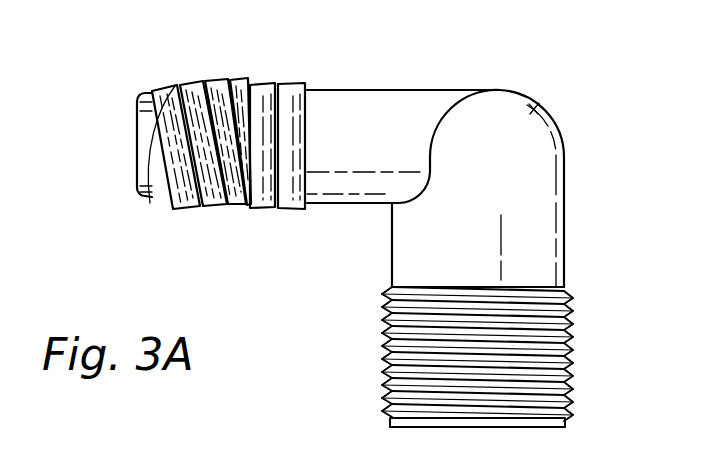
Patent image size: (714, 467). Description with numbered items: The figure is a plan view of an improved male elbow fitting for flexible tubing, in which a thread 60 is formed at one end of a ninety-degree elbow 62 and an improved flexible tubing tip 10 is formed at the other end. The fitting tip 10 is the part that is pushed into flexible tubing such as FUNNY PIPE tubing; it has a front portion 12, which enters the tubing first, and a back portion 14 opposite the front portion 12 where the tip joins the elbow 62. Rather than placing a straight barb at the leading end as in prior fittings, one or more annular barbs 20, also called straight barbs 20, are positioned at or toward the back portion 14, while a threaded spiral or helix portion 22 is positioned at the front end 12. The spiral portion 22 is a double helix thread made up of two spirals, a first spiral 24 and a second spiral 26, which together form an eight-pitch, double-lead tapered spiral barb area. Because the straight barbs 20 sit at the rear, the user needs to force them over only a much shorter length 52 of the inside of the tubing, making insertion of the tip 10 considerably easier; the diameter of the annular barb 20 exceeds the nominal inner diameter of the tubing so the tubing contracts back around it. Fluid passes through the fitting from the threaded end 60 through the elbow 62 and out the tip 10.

The fitting tip 10 is at (355, 234).
The front portion 12 is at (123, 207).
The back portion 14 is at (308, 230).
The annular barbs 20 is at (268, 80).
The spiral portion 22 is at (206, 167).
The first spiral 24 is at (204, 138).
The second spiral 26 is at (213, 80).
The length 52 is at (319, 462).
The thread 60 is at (573, 318).
The elbow 62 is at (538, 108).